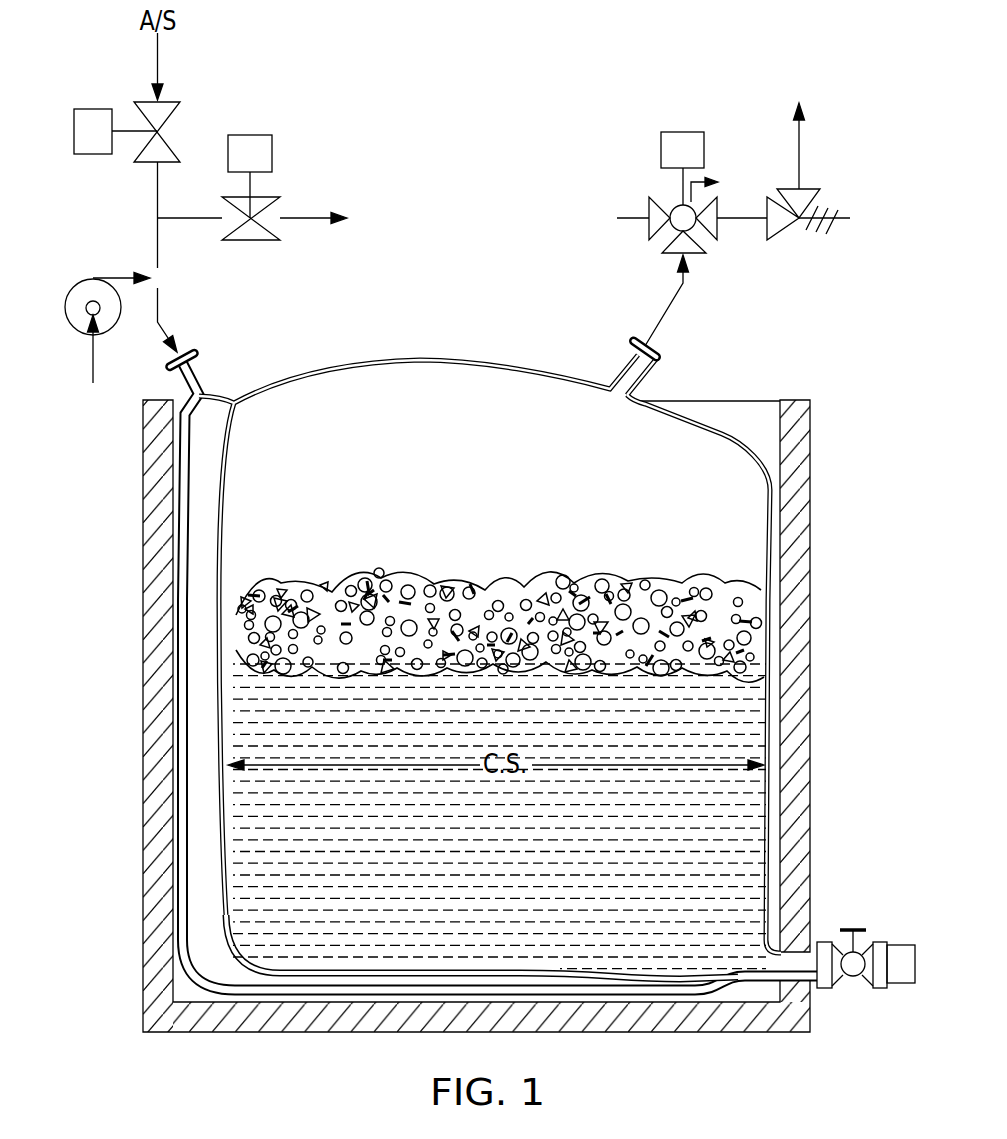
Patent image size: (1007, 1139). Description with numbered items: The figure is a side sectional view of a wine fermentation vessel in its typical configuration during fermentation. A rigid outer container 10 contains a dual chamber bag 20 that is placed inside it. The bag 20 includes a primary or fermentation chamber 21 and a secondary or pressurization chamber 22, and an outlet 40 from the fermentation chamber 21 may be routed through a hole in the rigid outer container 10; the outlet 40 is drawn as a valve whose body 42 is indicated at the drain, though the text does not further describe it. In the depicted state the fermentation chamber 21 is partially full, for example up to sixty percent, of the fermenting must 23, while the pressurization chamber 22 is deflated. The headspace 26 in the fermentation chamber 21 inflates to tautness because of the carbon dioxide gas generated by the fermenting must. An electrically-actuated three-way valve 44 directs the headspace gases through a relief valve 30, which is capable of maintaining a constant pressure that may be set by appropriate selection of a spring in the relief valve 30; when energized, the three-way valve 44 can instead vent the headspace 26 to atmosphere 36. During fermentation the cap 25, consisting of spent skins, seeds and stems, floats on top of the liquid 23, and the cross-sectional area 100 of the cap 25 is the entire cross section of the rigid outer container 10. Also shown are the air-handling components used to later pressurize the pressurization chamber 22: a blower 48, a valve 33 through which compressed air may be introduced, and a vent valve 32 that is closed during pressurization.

The rigid outer container 10 is at (810, 563).
The dual chamber bag 20 is at (304, 374).
The fermentation chamber 21 is at (428, 395).
The pressurization chamber 22 is at (197, 522).
The fermenting must 23 is at (715, 743).
The cap 25 is at (703, 583).
The headspace 26 is at (675, 468).
The relief valve 30 is at (818, 190).
The vent valve 32 is at (265, 208).
The valve 33 is at (176, 103).
The atmosphere 36 is at (518, 199).
The outlet 40 is at (816, 946).
The valve ball 42 is at (855, 977).
The three-way valve 44 is at (672, 231).
The blower 48 is at (115, 333).
The cross-sectional area 100 is at (260, 774).